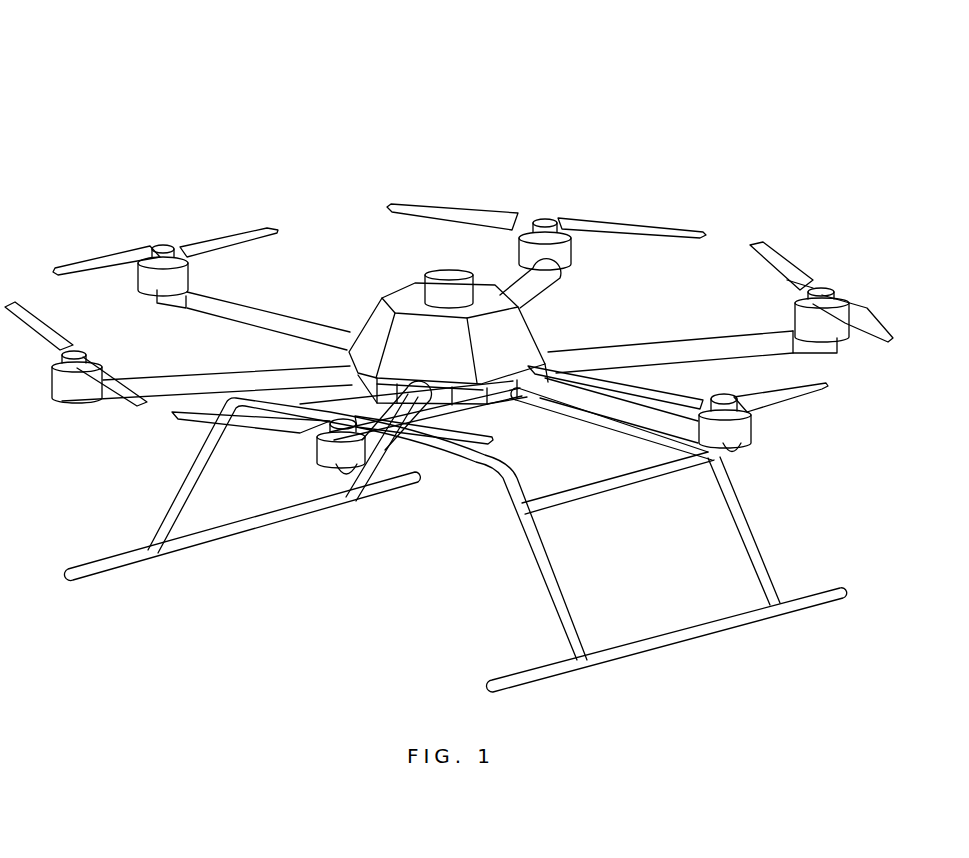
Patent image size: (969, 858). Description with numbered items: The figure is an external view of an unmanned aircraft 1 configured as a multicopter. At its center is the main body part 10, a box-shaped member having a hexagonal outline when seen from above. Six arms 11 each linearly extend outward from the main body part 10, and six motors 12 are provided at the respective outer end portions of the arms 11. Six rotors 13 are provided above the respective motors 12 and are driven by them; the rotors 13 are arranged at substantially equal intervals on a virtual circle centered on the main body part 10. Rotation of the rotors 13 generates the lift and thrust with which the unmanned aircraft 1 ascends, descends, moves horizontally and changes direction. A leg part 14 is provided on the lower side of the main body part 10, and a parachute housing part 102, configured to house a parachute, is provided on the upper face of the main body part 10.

The unmanned aircraft 1 is at (118, 124).
The main body part 10 is at (384, 312).
The parachute housing part 102 is at (433, 293).
The arm 11 is at (697, 355).
The motor 12 is at (167, 280).
The rotor 13 is at (593, 225).
The leg part 14 is at (557, 612).